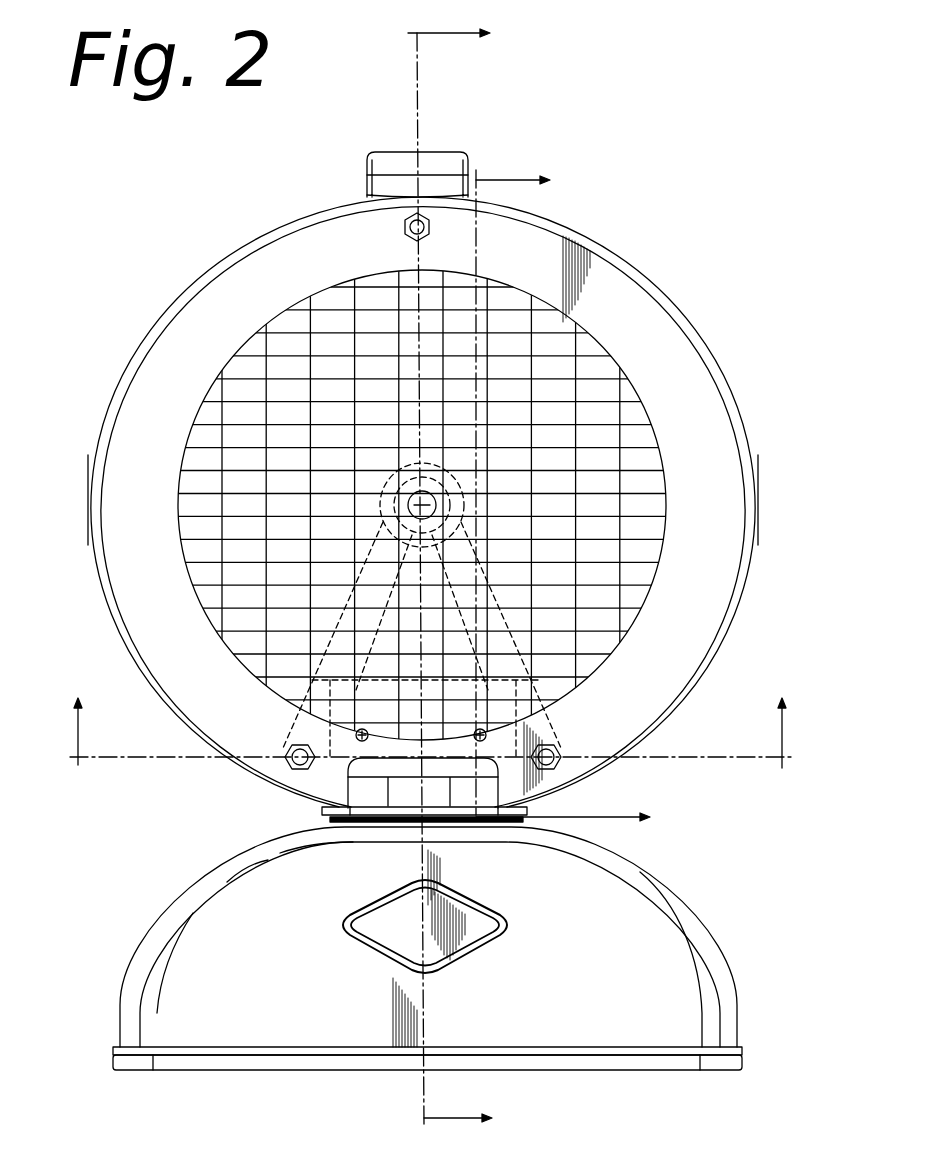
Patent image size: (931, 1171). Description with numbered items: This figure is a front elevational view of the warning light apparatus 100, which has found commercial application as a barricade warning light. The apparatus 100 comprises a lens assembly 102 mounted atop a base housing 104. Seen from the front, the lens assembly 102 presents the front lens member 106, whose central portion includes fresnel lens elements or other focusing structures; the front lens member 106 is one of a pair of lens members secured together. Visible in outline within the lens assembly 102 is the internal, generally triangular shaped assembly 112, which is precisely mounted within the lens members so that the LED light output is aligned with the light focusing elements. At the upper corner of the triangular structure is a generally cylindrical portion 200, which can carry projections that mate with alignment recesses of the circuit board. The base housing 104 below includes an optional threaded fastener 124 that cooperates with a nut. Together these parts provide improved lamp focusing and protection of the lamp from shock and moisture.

The warning light apparatus 100 is at (158, 181).
The lens assembly 102 is at (155, 310).
The base housing 104 is at (160, 926).
The front lens member 106 is at (637, 297).
The internal generally triangular shaped assembly 112 is at (493, 620).
The threaded fastener 124 is at (477, 915).
The generally cylindrical portion 200 is at (445, 490).